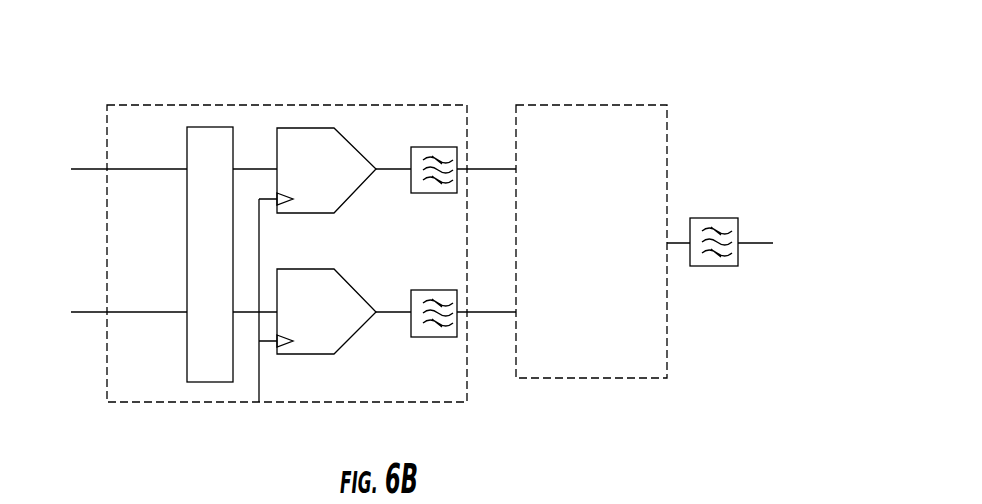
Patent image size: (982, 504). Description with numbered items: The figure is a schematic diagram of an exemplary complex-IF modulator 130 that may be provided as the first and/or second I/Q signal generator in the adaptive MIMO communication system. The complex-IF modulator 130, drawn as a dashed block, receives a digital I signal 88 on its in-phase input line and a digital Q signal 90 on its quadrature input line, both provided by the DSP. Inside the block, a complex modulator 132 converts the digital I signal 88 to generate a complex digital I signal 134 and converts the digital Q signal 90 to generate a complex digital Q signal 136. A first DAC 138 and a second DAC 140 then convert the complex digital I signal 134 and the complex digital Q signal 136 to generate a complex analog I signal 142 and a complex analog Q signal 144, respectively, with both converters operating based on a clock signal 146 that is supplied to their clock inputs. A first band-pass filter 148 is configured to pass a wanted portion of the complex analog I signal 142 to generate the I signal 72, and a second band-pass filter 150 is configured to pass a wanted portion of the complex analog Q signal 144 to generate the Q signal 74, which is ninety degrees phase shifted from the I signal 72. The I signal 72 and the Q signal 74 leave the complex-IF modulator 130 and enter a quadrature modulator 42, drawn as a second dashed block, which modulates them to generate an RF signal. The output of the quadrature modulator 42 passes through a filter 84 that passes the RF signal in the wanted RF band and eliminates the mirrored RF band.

The quadrature modulator 42 is at (625, 105).
The I signal 72 is at (485, 324).
The Q signal 74 is at (482, 159).
The filter 84 is at (713, 218).
The digital I signal 88 is at (90, 324).
The digital Q signal 90 is at (88, 159).
The complex-IF modulator 130 is at (347, 105).
The complex modulator 132 is at (208, 127).
The complex digital I signal 134 is at (248, 324).
The complex digital Q signal 136 is at (253, 159).
The first DAC 138 is at (353, 337).
The second DAC 140 is at (350, 141).
The complex analog I signal 142 is at (383, 299).
The complex analog Q signal 144 is at (392, 181).
The clock signal 146 is at (272, 365).
The first band-pass filter 148 is at (430, 290).
The second band-pass filter 150 is at (432, 193).